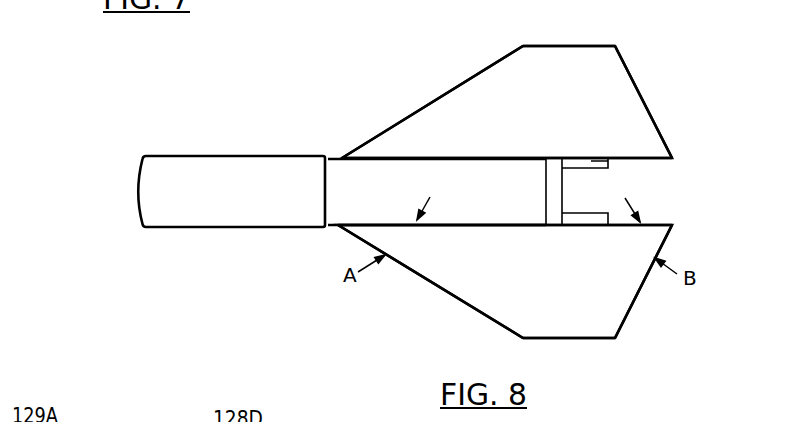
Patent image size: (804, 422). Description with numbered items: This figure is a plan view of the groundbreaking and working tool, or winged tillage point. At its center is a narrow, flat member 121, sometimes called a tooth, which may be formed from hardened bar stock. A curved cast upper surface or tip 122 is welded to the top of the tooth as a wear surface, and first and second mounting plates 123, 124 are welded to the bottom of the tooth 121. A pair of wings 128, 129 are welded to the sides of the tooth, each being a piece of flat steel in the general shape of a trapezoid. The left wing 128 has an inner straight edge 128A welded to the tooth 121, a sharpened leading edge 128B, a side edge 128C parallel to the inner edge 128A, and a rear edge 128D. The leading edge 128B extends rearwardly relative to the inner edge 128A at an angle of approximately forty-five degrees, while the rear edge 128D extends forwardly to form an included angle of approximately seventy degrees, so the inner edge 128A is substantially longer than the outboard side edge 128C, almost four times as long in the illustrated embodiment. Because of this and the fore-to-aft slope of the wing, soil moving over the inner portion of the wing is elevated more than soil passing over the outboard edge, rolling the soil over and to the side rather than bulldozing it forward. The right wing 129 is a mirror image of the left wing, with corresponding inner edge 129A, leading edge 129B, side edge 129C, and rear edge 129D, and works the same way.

The flat member 121 is at (350, 187).
The curved cast upper surface 122 is at (164, 205).
The first mounting plate 123 is at (588, 215).
The second mounting plate 124 is at (588, 163).
The left wing 128 is at (443, 247).
The inner straight edge 128A is at (522, 228).
The leading edge 128B is at (460, 302).
The side edge 128C is at (605, 338).
The rear edge 128D is at (647, 280).
The right wing 129 is at (473, 120).
The inner straight edge 129A is at (522, 158).
The leading edge 129B is at (468, 79).
The side edge 129C is at (538, 46).
The rear edge 129D is at (627, 67).